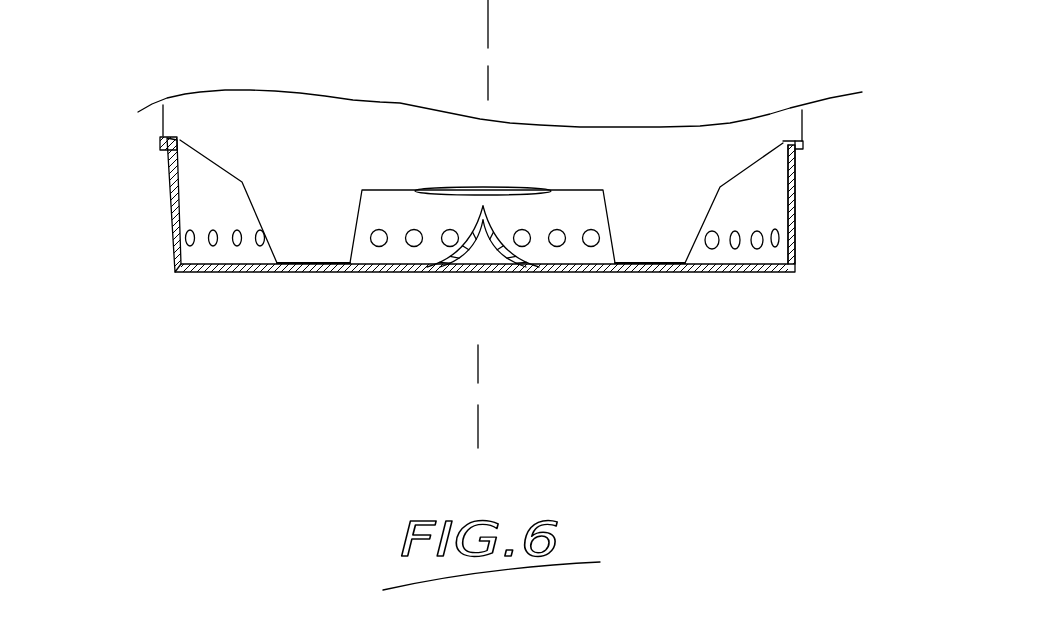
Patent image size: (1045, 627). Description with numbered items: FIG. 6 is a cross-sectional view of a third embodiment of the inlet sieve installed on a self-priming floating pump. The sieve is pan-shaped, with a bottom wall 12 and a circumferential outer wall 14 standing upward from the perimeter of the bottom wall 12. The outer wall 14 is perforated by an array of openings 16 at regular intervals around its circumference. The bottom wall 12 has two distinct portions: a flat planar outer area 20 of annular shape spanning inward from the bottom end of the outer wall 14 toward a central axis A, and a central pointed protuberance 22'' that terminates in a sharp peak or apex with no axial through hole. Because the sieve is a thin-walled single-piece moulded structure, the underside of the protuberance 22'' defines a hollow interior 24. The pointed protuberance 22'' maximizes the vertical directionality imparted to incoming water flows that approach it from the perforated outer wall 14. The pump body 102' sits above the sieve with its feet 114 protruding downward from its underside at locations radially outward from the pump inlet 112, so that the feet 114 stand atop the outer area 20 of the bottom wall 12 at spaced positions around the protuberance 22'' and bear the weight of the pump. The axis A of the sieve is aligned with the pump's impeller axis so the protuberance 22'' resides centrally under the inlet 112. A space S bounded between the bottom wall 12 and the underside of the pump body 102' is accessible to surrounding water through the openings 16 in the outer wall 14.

The pump body 102' is at (466, 119).
The bottom wall 12 is at (232, 255).
The circumferential outer wall 14 is at (787, 205).
The flat planar outer area 20 is at (288, 265).
The feet 114 is at (330, 264).
The space S is at (390, 258).
The pump inlet 112 is at (452, 191).
The hollow interior 24 is at (485, 260).
The pointed protuberance 22'' is at (523, 272).
The openings 16 is at (593, 246).
The central axis A is at (486, 424).